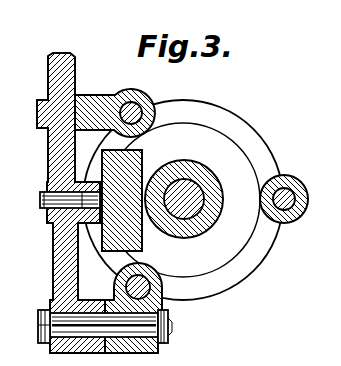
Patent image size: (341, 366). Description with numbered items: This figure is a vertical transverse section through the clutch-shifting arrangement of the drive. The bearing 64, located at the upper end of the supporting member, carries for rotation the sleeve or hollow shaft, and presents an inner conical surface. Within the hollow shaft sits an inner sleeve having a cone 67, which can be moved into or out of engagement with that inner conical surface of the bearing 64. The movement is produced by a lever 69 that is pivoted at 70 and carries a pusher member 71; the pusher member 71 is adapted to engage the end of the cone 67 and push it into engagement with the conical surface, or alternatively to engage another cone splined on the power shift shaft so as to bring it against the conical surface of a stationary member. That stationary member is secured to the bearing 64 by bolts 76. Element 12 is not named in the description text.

The shaft hub 12 is at (200, 217).
The bearing 64 is at (233, 270).
The cone 67 is at (243, 163).
The lever 69 is at (60, 248).
The pivot 70 is at (172, 326).
The pusher member 71 is at (100, 166).
The bolts 76 is at (38, 327).